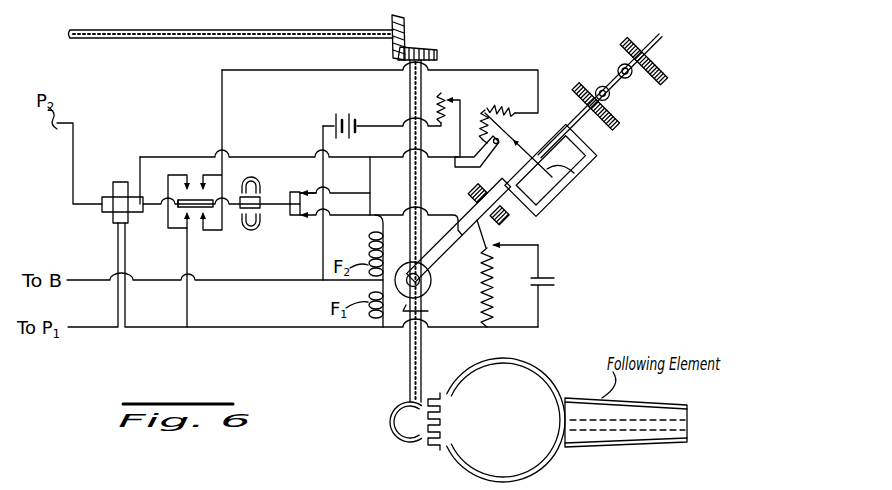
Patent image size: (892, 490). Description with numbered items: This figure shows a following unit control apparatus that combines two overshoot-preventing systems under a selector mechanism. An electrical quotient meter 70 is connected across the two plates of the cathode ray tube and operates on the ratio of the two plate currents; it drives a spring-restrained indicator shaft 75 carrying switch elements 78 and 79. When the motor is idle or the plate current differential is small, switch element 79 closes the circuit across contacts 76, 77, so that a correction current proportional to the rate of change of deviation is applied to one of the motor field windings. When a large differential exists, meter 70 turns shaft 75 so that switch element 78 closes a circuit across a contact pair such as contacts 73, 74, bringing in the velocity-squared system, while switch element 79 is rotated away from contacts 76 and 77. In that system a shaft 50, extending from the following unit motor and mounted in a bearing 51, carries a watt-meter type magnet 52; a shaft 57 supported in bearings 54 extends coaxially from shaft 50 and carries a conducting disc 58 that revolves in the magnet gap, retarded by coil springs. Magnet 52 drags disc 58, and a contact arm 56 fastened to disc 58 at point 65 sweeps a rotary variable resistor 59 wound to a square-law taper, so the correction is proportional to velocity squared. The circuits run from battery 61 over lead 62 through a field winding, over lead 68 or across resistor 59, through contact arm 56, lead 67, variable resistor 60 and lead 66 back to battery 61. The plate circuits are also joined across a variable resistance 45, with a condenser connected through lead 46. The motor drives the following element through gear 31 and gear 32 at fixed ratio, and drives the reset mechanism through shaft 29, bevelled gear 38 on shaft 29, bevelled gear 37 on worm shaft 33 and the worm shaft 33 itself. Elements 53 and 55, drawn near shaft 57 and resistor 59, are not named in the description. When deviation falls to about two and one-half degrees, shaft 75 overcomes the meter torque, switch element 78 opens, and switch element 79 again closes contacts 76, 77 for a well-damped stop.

The shaft 29 is at (410, 368).
The gear 31 is at (404, 436).
The gear 32 is at (537, 380).
The worm shaft 33 is at (265, 30).
The bevelled gear 37 is at (406, 31).
The bevelled gear 38 is at (437, 54).
The variable resistance 45 is at (493, 303).
The lead 46 is at (538, 313).
The shaft 50 is at (443, 257).
The bearing 51 is at (469, 192).
The watt-meter type magnet 52 is at (556, 194).
The collars 53 is at (617, 69).
The bearings 54 is at (648, 106).
The spring 55 is at (487, 109).
The contact arm 56 is at (497, 123).
The shaft 57 is at (583, 119).
The disc 58 is at (573, 173).
The rotary-type variable resistor 59 is at (503, 105).
The variable resistor 60 is at (443, 93).
The battery 61 is at (347, 114).
The lead 62 is at (325, 240).
The point 65 is at (502, 146).
The lead 66 is at (378, 125).
The lead 67 is at (460, 134).
The lead 68 is at (382, 157).
The electrical quotient meter 70 is at (117, 217).
The contact 73 is at (190, 228).
The contact 74 is at (208, 232).
The spring-restrained indicator shaft 75 is at (153, 208).
The contact 76 is at (309, 190).
The contact 77 is at (296, 216).
The switch element 78 is at (182, 208).
The switch element 79 is at (293, 194).